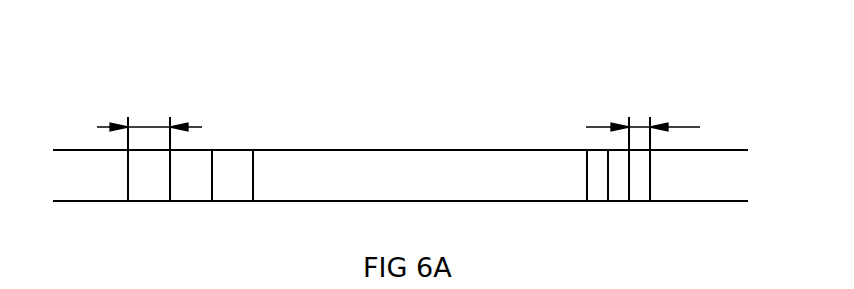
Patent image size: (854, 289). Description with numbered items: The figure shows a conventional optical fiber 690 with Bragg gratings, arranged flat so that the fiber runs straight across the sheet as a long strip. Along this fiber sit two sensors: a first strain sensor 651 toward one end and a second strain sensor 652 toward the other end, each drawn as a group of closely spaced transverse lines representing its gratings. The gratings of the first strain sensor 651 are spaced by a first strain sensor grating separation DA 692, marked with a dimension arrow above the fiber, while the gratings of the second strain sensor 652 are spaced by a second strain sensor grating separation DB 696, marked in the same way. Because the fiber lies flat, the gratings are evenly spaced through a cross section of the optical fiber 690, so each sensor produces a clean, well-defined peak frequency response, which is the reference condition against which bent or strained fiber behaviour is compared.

The optical fiber 690 is at (415, 150).
The first strain sensor 651 is at (183, 201).
The second strain sensor 652 is at (617, 201).
The first strain sensor grating separation DA 692 is at (150, 82).
The second strain sensor grating separation DB 696 is at (697, 82).